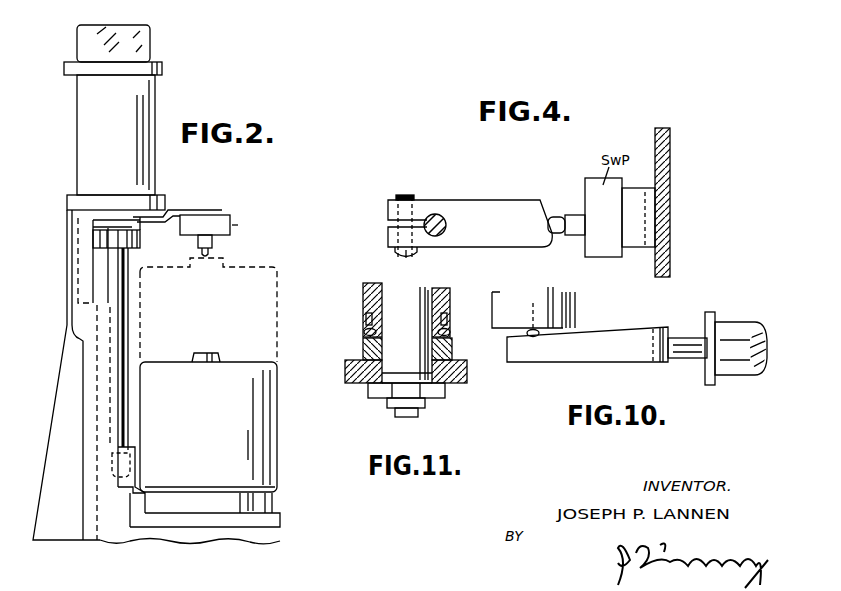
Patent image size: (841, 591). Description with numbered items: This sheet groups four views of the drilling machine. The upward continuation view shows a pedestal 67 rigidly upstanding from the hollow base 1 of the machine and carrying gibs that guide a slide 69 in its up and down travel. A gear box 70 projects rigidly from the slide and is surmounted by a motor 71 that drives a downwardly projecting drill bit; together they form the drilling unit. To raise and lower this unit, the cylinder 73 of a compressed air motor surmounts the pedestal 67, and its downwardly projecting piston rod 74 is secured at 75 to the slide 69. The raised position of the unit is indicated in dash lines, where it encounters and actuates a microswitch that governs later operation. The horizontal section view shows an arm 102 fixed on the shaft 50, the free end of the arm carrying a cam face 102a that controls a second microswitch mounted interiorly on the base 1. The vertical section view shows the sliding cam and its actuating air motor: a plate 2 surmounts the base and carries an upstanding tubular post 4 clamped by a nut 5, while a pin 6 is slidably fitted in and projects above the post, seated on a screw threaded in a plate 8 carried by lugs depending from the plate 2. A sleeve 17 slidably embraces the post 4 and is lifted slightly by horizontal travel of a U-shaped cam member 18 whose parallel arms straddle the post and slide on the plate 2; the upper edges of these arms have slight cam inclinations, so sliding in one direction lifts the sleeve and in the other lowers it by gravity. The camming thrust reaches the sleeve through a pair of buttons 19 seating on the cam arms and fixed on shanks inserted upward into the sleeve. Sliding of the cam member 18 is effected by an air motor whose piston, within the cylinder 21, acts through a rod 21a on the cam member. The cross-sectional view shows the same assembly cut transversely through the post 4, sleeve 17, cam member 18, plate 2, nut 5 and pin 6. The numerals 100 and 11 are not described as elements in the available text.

In FIG. 2, the cylinder 73 is at (119, 136).
In FIG. 2, the piston rod 74 is at (128, 292).
In FIG. 2, the motor 71 is at (235, 400).
In FIG. 2, the securing point 75 is at (136, 465).
In FIG. 2, the pedestal 67 is at (86, 473).
In FIG. 2, the slide 69 is at (143, 543).
In FIG. 2, the gear box 70 is at (247, 528).
In FIG. 2, the plate 8 is at (33, 419).
In FIG. 4, the machine 100 is at (492, 13).
In FIG. 4, the arm 102 is at (511, 232).
In FIG. 4, the cam face 102a is at (545, 207).
In FIG. 4, the shaft 50 is at (440, 214).
In FIG. 4, the hollow base 1 is at (670, 152).
In FIG. 4, the section line 11- 11 is at (540, 281).
In FIG. 10, the section line 11- 11 is at (523, 370).
In FIG. 11, the sleeve 17 is at (363, 294).
In FIG. 10, the sleeve 17 is at (577, 304).
In FIG. 11, the tubular post 4 is at (412, 315).
In FIG. 11, the buttons 19 is at (361, 335).
In FIG. 10, the buttons 19 is at (527, 334).
In FIG. 11, the cam member 18 is at (363, 352).
In FIG. 10, the cam member 18 is at (609, 358).
In FIG. 11, the plate 2 is at (355, 384).
In FIG. 11, the nut 5 is at (444, 398).
In FIG. 11, the pin 6 is at (395, 411).
In FIG. 10, the rod 21a is at (683, 338).
In FIG. 10, the cylinder 21 is at (737, 321).